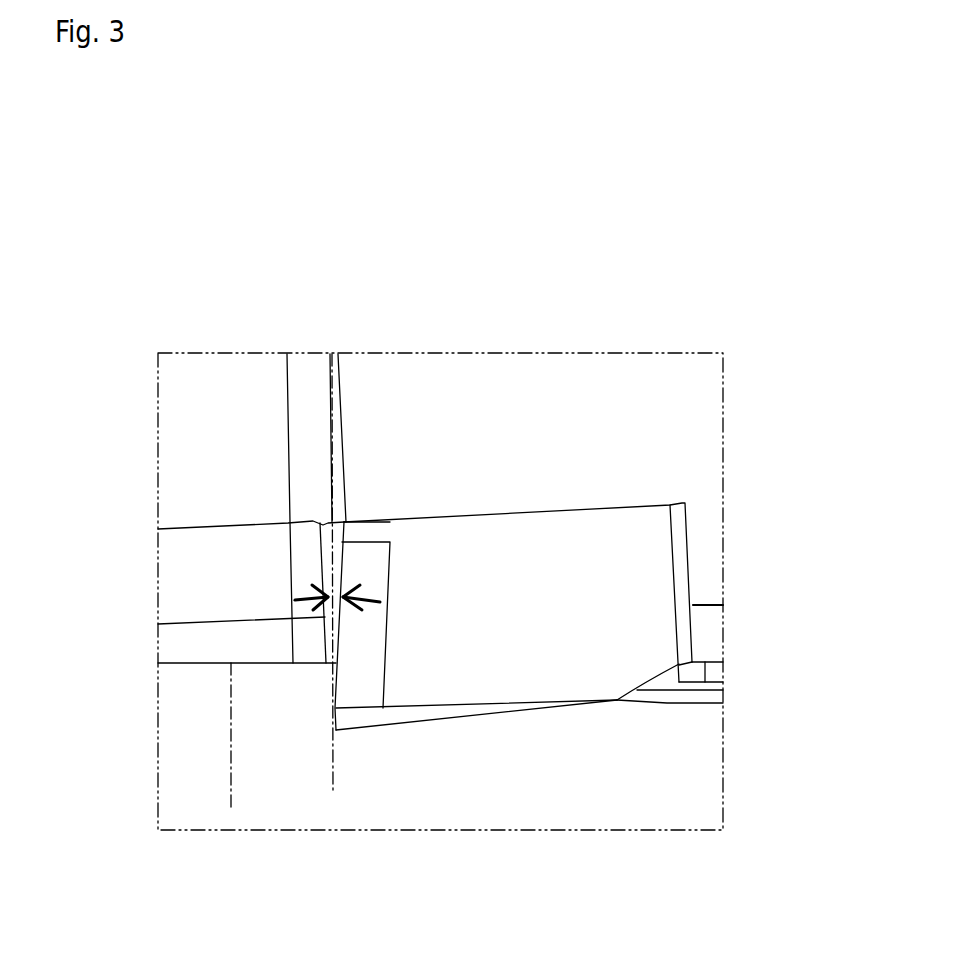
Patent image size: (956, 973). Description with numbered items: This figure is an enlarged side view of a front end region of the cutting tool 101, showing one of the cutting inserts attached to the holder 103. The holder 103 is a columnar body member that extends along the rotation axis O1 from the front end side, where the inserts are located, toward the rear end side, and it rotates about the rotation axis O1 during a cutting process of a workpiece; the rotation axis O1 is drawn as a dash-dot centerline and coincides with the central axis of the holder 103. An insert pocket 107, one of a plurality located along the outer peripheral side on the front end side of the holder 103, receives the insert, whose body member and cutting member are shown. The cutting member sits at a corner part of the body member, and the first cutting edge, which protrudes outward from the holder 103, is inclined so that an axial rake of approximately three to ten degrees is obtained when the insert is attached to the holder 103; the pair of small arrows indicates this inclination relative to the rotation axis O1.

The cutting tool 101 is at (238, 317).
The holder 103 is at (615, 407).
The insert pocket 107 is at (542, 513).
The rotation axis O1 is at (228, 767).